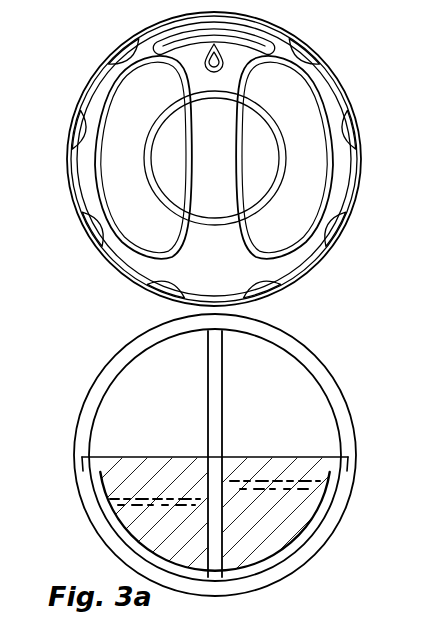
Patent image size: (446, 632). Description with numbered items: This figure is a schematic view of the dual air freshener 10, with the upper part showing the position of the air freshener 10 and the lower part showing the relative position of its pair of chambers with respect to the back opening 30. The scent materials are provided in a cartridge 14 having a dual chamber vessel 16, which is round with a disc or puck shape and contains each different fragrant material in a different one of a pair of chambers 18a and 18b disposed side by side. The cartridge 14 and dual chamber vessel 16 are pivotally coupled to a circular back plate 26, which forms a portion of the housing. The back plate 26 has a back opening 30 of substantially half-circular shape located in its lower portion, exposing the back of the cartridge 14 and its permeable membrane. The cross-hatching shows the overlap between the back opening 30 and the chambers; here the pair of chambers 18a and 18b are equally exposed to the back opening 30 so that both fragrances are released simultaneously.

The dual air freshener 10 is at (120, 56).
The cartridge 14 is at (130, 363).
The dual chamber vessel 16 is at (205, 451).
The first chamber 18a is at (183, 402).
The second chamber 18b is at (283, 412).
The back plate 26 is at (288, 333).
The back opening 30 is at (105, 530).